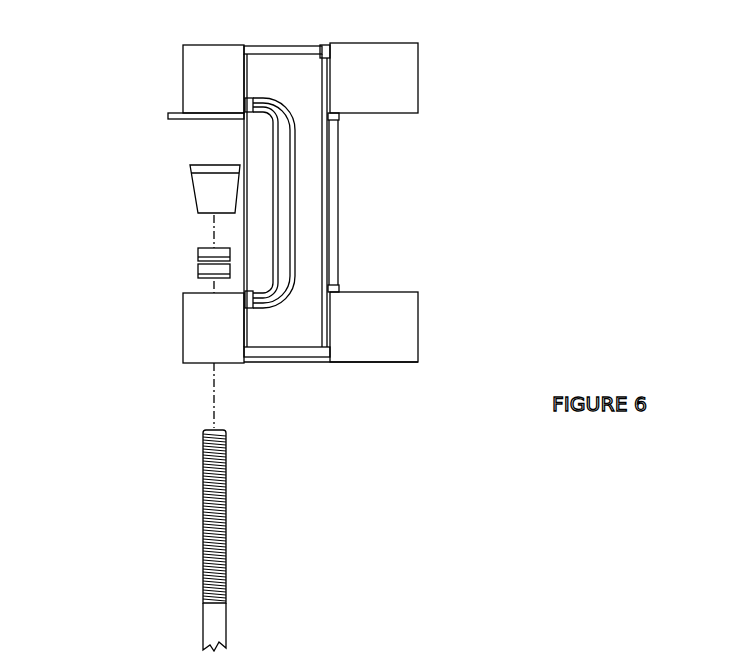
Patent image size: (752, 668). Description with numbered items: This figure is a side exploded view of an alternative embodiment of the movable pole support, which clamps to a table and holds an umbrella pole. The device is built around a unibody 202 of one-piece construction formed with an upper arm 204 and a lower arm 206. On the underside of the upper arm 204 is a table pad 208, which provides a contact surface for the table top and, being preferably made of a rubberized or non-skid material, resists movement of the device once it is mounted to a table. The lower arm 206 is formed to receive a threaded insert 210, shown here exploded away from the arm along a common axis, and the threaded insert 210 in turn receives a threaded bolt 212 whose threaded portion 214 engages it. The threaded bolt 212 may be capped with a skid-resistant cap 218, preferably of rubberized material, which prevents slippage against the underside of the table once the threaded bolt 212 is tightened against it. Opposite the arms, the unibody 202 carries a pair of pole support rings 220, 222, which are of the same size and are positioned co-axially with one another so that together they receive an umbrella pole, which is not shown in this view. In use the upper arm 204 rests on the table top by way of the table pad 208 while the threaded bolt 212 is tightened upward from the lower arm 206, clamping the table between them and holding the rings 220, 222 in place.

The unibody 202 is at (307, 212).
The upper arm 204 is at (192, 66).
The lower arm 206 is at (197, 327).
The table pad 208 is at (170, 118).
The threaded insert 210 is at (197, 262).
The threaded bolt 212 is at (225, 630).
The threaded portion 214 is at (203, 525).
The skid-resistant cap 218 is at (195, 191).
The pole support ring 220 is at (398, 87).
The pole support ring 222 is at (398, 338).